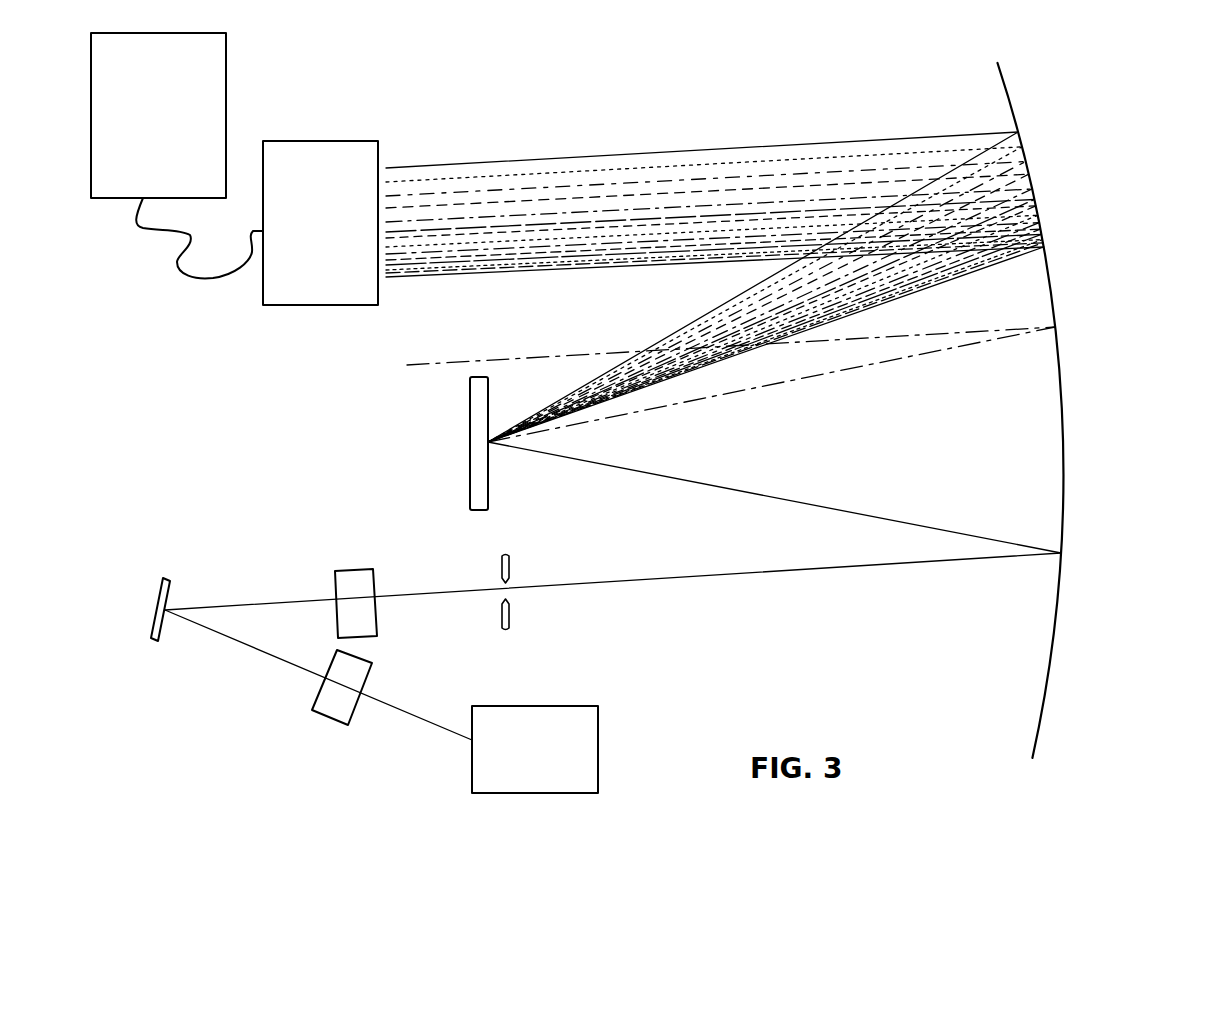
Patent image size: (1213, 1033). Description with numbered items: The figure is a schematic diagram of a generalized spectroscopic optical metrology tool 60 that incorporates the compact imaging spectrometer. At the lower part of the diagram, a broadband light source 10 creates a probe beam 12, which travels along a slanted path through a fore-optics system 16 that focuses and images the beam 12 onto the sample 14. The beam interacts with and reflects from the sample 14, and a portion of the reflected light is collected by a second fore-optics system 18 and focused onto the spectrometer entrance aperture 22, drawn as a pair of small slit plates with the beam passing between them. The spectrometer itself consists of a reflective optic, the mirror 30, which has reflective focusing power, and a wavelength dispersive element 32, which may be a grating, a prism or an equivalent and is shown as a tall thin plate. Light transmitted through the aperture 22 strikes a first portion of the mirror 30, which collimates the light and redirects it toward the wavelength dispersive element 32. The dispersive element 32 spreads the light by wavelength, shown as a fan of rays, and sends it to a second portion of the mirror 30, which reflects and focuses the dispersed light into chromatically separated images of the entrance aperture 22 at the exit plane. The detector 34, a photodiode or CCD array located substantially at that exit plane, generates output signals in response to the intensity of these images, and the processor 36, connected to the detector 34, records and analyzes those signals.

The broadband light source 10 is at (547, 787).
The probe beam 12 is at (413, 715).
The sample 14 is at (161, 586).
The fore-optics system 16 is at (322, 712).
The fore-optics system 18 is at (352, 570).
The spectrometer entrance aperture 22 is at (510, 567).
The mirror 30 is at (1052, 277).
The wavelength dispersive element 32 is at (468, 453).
The detector 34 is at (336, 256).
The processor 36 is at (169, 146).
The spectroscopic optical metrology tool 60 is at (670, 86).